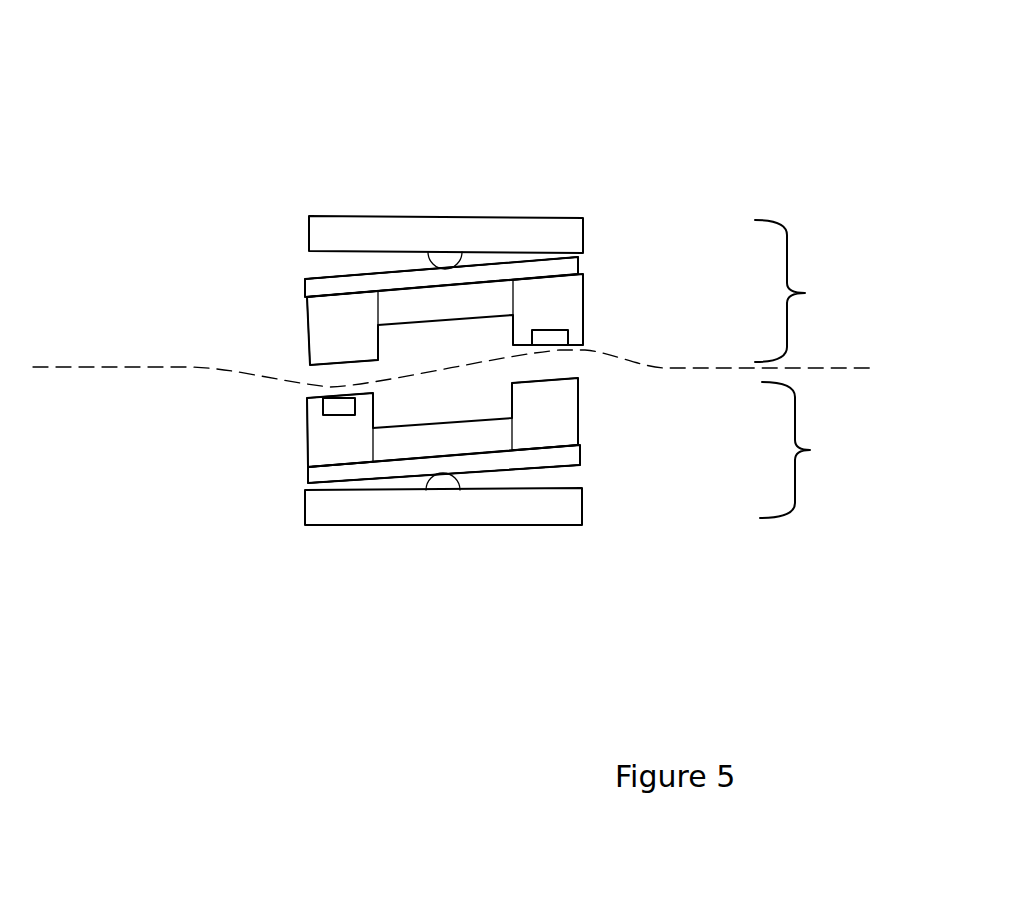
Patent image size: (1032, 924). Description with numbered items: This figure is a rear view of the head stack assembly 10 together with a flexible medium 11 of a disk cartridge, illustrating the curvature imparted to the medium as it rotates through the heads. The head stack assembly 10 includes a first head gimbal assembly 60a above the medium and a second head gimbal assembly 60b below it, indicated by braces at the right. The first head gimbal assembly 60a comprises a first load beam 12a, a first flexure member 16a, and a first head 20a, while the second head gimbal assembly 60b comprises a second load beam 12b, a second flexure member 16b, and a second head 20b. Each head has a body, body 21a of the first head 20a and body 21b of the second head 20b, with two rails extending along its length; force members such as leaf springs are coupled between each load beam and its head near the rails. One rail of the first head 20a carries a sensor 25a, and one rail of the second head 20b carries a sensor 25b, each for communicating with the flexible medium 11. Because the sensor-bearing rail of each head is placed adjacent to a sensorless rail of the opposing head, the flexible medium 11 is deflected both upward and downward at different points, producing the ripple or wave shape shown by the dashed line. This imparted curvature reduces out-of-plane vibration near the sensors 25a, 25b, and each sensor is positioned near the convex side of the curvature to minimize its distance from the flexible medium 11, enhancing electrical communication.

The head stack assembly 10 is at (424, 39).
The flexible medium 11 is at (47, 367).
The first load beam 12a is at (447, 216).
The second load beam 12b is at (443, 525).
The first flexure member 16a is at (322, 288).
The second flexure member 16b is at (338, 477).
The first head 20a is at (495, 292).
The second head 20b is at (510, 438).
The body 21a is at (320, 313).
The body 21b is at (343, 448).
The sensor 25a is at (568, 337).
The sensor 25b is at (325, 412).
The first head gimbal assembly 60a is at (817, 291).
The second head gimbal assembly 60b is at (824, 450).